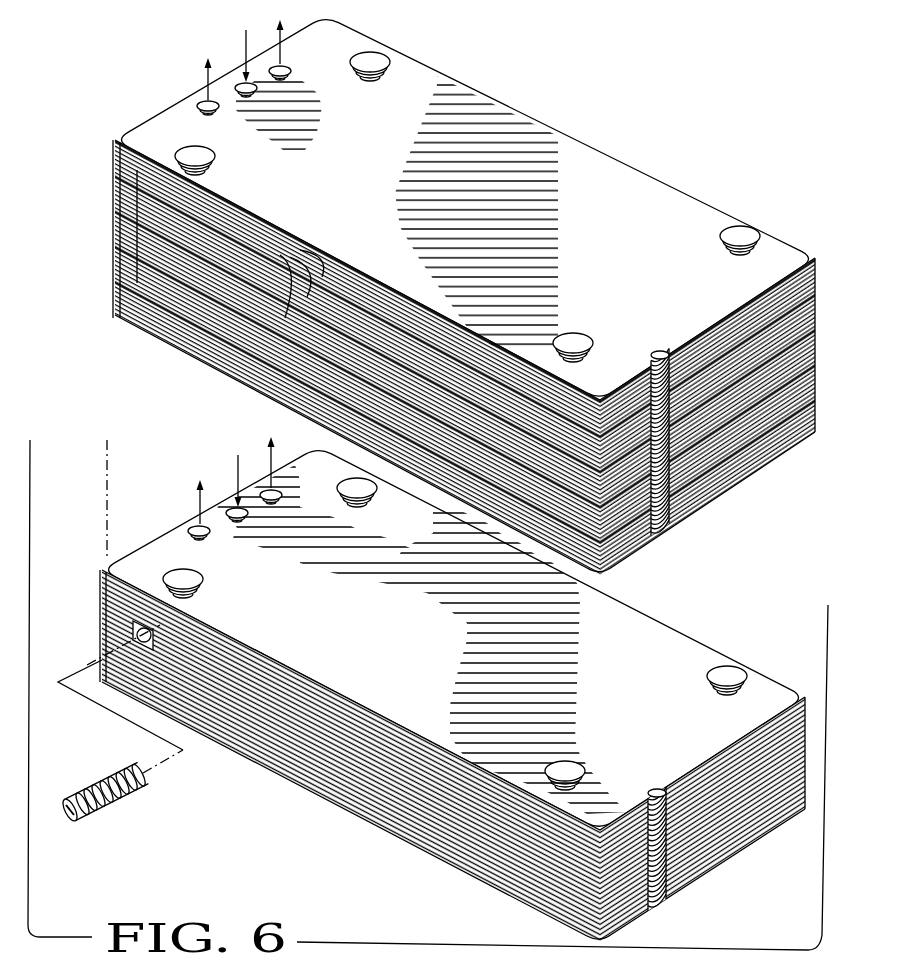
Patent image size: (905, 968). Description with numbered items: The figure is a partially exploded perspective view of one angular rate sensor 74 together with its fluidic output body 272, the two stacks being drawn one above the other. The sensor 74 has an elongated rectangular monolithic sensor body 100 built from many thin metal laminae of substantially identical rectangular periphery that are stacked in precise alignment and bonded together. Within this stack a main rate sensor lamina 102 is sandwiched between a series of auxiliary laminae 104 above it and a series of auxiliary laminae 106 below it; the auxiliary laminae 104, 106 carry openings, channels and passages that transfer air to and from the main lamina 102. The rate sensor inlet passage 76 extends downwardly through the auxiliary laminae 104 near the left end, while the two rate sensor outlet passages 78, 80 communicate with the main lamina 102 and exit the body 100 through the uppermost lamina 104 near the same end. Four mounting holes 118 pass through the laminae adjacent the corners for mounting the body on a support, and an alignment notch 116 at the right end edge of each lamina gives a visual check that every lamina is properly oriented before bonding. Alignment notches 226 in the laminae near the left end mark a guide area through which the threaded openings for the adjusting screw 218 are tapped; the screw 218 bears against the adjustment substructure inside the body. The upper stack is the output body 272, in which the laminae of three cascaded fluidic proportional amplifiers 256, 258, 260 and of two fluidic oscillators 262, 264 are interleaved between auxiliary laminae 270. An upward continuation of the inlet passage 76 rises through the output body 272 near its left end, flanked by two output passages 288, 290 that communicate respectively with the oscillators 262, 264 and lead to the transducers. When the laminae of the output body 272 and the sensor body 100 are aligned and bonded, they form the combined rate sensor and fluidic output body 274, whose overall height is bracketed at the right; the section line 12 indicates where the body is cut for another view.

The section line 12- 12 is at (225, 800).
The angular rate sensor 74 is at (248, 817).
The rate sensor inlet passage 76 is at (232, 508).
The rate sensor outlet passage 78 is at (189, 526).
The rate sensor outlet passage 80 is at (264, 491).
The sensor body 100 is at (348, 740).
The main rate sensor lamina 102 is at (103, 604).
The auxiliary laminae 104 is at (96, 570).
The auxiliary laminae 106 is at (93, 686).
The alignment notch 116 is at (660, 904).
The mounting holes 118 is at (578, 765).
The adjusting screw 218 is at (120, 798).
The alignment notches 226 is at (156, 628).
The fluidic proportional amplifier 256 is at (112, 292).
The fluidic proportional amplifier 258 is at (112, 268).
The fluidic proportional amplifier 260 is at (112, 244).
The fluidic oscillator 262 is at (112, 212).
The fluidic oscillator 264 is at (112, 182).
The auxiliary laminae 270 is at (394, 345).
The output body 272 is at (553, 120).
The combined rate sensor and fluidic output body 274 is at (803, 672).
The output passage 288 is at (213, 116).
The output passage 290 is at (290, 78).